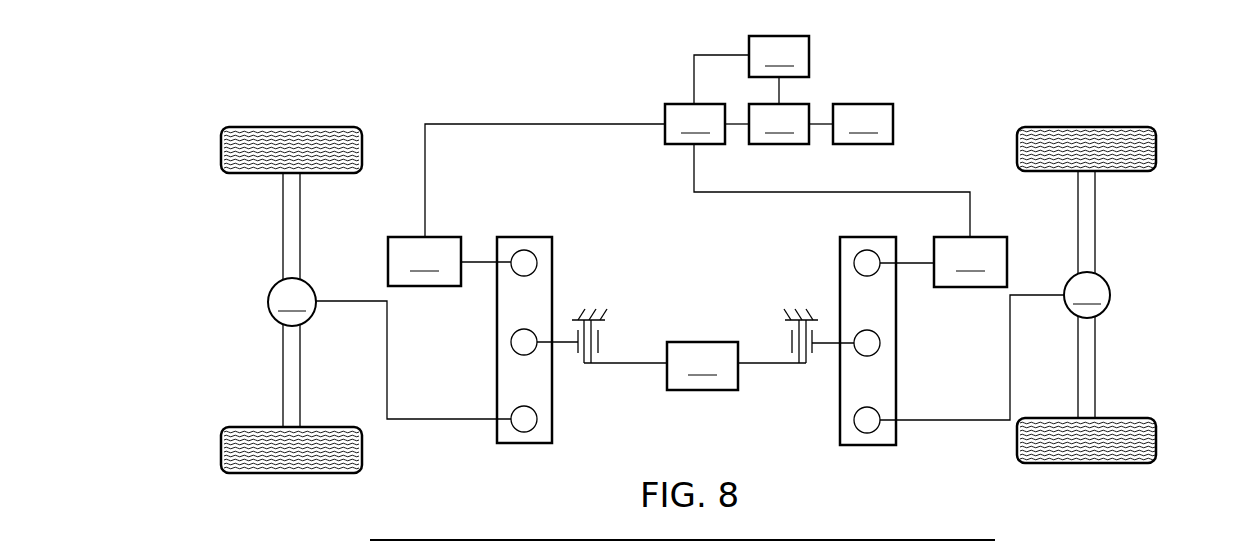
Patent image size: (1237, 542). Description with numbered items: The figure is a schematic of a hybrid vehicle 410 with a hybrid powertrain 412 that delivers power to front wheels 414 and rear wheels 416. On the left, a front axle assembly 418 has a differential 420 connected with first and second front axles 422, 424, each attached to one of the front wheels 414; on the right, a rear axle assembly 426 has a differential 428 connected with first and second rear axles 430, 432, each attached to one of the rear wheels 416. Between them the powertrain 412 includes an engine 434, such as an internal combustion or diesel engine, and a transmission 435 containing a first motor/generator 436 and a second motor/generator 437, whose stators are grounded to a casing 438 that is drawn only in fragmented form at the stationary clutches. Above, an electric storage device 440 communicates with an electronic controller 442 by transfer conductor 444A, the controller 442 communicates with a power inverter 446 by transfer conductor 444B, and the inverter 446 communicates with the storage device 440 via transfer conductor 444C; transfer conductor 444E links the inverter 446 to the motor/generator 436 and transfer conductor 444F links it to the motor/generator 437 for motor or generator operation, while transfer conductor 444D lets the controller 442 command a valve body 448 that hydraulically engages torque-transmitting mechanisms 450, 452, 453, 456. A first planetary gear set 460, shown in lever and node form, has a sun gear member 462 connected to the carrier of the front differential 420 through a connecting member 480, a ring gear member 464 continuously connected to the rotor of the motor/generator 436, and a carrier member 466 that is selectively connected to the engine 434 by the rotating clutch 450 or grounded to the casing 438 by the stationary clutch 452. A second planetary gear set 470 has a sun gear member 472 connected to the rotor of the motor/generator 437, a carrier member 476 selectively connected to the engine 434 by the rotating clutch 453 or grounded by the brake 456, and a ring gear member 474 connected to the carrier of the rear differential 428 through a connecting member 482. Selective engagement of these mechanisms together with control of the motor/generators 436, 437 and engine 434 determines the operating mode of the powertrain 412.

The hybrid vehicle 410 is at (352, 68).
The hybrid powertrain 412 is at (437, 95).
The front wheels 414 is at (290, 127).
The rear wheels 416 is at (1087, 127).
The front axle assembly 418 is at (332, 236).
The differential 420 is at (292, 302).
The first front axle 422 is at (283, 374).
The second front axle 424 is at (283, 227).
The rear axle assembly 426 is at (1060, 262).
The differential 428 is at (1087, 295).
The first rear axle 430 is at (1095, 370).
The second rear axle 432 is at (1095, 225).
The engine 434 is at (702, 366).
The transmission 435 is at (553, 194).
The first motor/generator 436 is at (424, 261).
The second motor/generator 437 is at (970, 262).
The casing 438 is at (606, 318).
The electric storage device 440 is at (779, 56).
The electronic controller 442 is at (779, 124).
The transfer conductor 444A is at (779, 90).
The transfer conductor 444B is at (738, 124).
The transfer conductor 444C is at (722, 55).
The transfer conductor 444D is at (820, 124).
The transfer conductor 444E is at (548, 124).
The transfer conductor 444F is at (918, 192).
The power inverter 446 is at (695, 124).
The valve body 448 is at (863, 124).
The torque-transmitting mechanism 450 is at (578, 370).
The torque-transmitting mechanism 452 is at (610, 330).
The torque-transmitting mechanism 453 is at (812, 372).
The torque-transmitting mechanism 456 is at (785, 328).
The first planetary gear set 460 is at (497, 441).
The sun gear member 462 is at (524, 432).
The ring gear member 464 is at (524, 250).
The carrier member 466 is at (511, 342).
The second planetary gear set 470 is at (840, 418).
The sun gear member 472 is at (867, 250).
The ring gear member 474 is at (867, 407).
The carrier member 476 is at (880, 343).
The connecting member 480 is at (430, 418).
The connecting member 482 is at (972, 420).